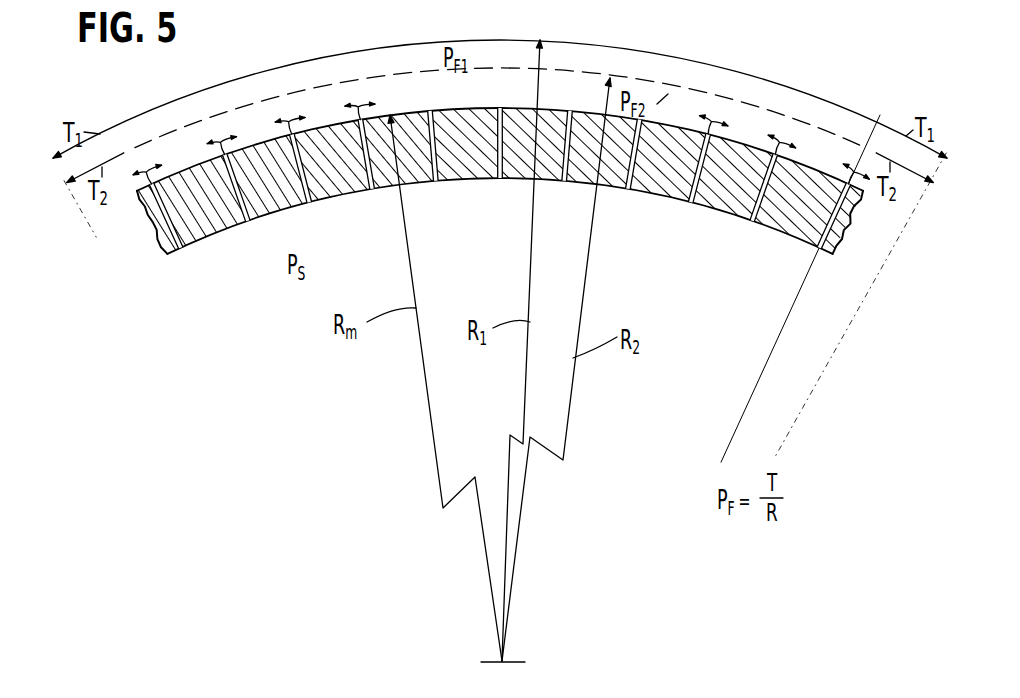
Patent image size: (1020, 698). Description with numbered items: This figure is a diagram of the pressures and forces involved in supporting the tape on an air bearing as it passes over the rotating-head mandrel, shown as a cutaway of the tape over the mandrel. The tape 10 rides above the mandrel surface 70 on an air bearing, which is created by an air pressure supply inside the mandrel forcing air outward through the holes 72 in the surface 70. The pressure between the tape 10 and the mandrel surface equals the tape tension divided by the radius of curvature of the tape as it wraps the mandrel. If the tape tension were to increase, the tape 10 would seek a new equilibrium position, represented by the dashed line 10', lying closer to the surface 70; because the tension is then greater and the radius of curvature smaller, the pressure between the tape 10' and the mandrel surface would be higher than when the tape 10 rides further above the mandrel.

The tape 10 is at (500, 99).
The dashed line 10' is at (501, 83).
The mandrel surface 70 is at (467, 180).
The holes 72 is at (293, 132).